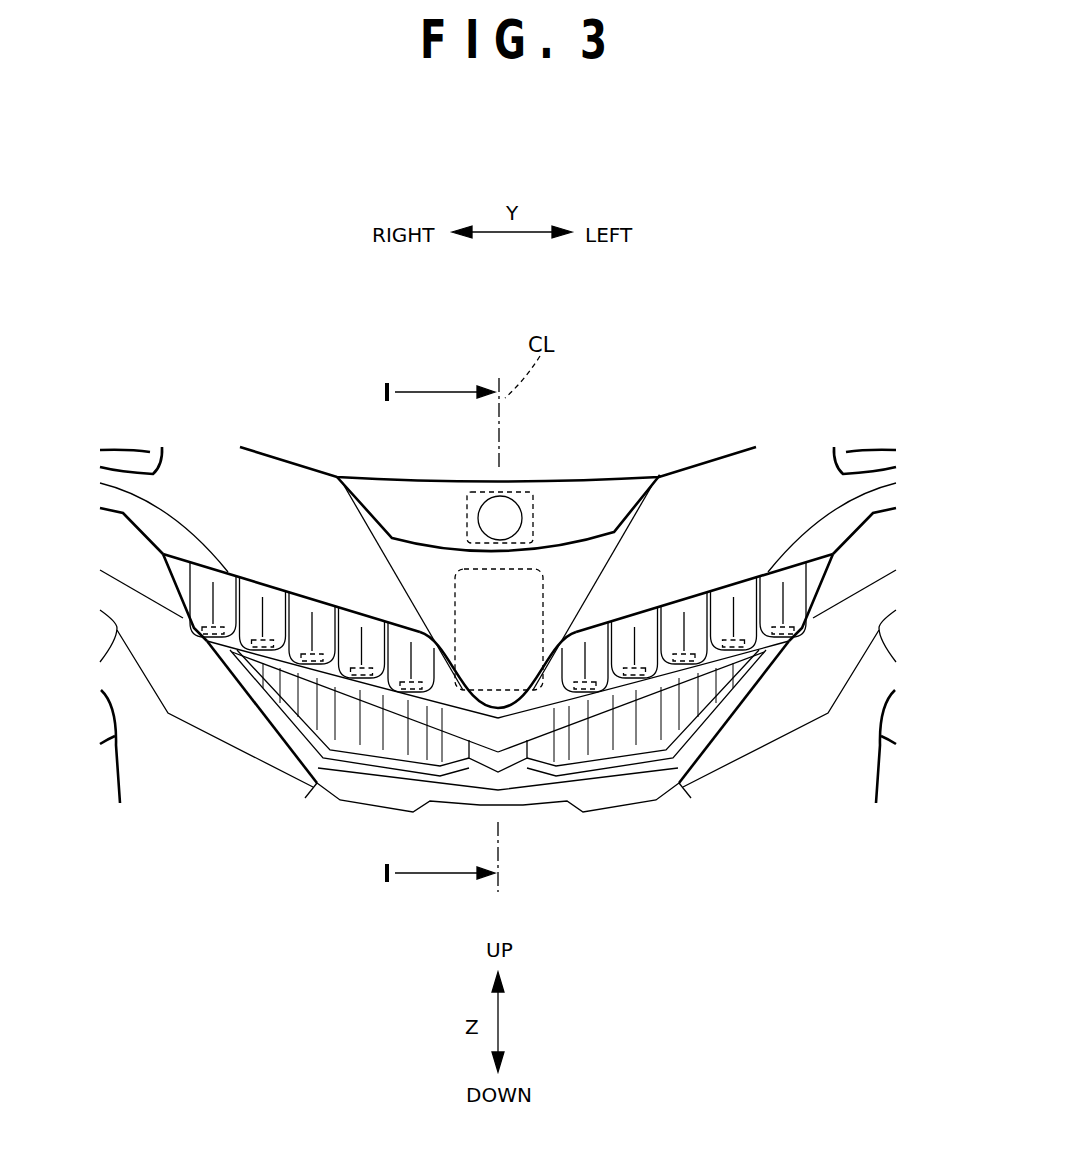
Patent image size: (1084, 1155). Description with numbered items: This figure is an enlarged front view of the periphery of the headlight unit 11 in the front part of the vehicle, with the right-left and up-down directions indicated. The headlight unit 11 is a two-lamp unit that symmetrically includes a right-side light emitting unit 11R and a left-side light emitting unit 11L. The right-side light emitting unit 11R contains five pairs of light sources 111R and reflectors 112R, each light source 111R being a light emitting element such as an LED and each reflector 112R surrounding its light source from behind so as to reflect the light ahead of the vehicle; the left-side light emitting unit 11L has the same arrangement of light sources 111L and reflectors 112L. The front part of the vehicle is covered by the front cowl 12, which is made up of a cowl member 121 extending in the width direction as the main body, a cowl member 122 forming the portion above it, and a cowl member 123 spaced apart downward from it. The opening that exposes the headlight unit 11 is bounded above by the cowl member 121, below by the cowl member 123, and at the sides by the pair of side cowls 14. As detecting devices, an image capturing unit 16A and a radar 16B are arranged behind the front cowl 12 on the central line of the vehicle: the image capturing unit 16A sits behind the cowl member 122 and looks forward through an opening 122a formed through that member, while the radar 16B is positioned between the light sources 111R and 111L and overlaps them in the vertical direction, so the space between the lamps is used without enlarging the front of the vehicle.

The headlight unit 11 is at (527, 802).
The right-side light emitting unit 11R is at (290, 592).
The left-side light emitting unit 11L is at (705, 590).
The light source 111R is at (207, 643).
The light source 111L is at (639, 768).
The reflector 112R is at (190, 562).
The reflector 112L is at (655, 607).
The front cowl 12 is at (785, 497).
The cowl member 121 is at (583, 553).
The cowl member 122 is at (345, 474).
The opening 122a is at (517, 497).
The cowl member 123 is at (614, 793).
The side cowl 14 is at (210, 713).
The image capturing unit 16A is at (466, 510).
The radar 16B is at (452, 608).